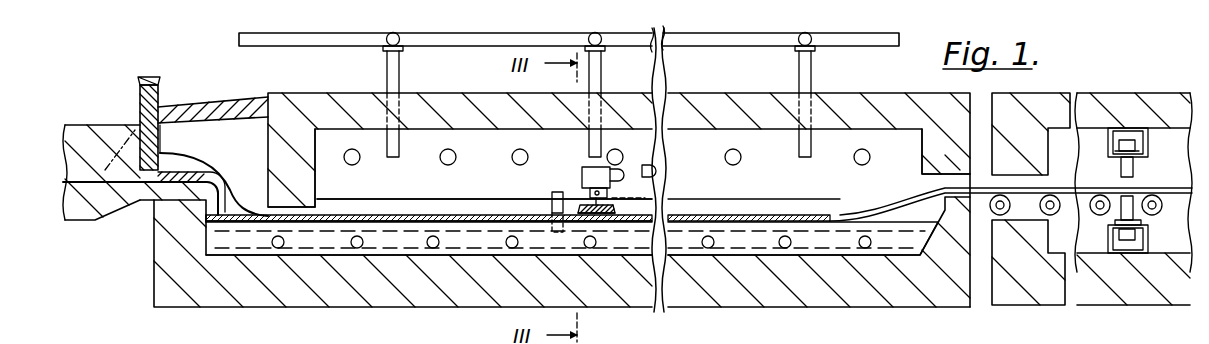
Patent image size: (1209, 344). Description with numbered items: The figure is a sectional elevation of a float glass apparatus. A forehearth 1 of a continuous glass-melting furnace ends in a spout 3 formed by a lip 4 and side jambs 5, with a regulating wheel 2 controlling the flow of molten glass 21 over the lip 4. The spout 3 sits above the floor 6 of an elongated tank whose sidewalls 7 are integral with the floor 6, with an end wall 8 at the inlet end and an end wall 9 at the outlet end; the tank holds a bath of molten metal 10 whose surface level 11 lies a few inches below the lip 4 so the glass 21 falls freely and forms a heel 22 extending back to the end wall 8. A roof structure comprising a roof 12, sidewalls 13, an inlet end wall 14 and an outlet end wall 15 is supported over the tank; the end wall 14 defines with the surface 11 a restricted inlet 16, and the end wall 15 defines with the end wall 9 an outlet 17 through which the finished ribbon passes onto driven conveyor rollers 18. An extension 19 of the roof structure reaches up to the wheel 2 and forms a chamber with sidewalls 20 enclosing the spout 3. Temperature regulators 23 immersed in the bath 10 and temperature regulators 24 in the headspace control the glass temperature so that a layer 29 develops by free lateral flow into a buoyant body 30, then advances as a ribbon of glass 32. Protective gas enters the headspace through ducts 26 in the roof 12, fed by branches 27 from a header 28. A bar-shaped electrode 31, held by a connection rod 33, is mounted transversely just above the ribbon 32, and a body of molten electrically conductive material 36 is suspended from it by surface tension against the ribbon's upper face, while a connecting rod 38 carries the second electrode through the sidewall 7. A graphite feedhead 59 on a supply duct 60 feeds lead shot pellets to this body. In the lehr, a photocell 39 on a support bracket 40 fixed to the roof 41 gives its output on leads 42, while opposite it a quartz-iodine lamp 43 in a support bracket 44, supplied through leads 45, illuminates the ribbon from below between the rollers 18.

The forehearth 1 is at (80, 210).
The regulating wheel 2 is at (140, 106).
The spout 3 is at (148, 205).
The lip 4 is at (205, 193).
The side jambs 5 is at (177, 162).
The floor 6 is at (397, 292).
The sidewalls 7 is at (434, 205).
The end wall 8 is at (157, 279).
The end wall 9 is at (962, 288).
The bath of molten metal 10 is at (637, 246).
The surface level 11 is at (909, 220).
The roof 12 is at (644, 103).
The sidewalls 13 is at (447, 135).
The inlet end wall 14 is at (277, 126).
The outlet end wall 15 is at (937, 139).
The inlet 16 is at (262, 204).
The outlet 17 is at (933, 174).
The conveyor rollers 18 is at (1060, 211).
The extension 19 is at (231, 108).
The sidewalls 20 is at (176, 130).
The molten glass 21 is at (214, 176).
The heel 22 is at (220, 221).
The temperature regulators 23 is at (357, 248).
The temperature regulators 24 is at (360, 164).
The ducts 26 is at (396, 90).
The branches 27 is at (386, 43).
The header 28 is at (306, 38).
The layer 29 is at (260, 221).
The buoyant body 30 is at (323, 221).
The bar-shaped electrode 31 is at (616, 212).
The ribbon of glass 32 is at (477, 221).
The connection rod 33 is at (608, 193).
The body of molten electrically conductive material 36 is at (582, 206).
The connecting rod 38 is at (551, 194).
The photocell 39 is at (1135, 172).
The support bracket 40 is at (1149, 138).
The roof 41 is at (1168, 98).
The leads 42 is at (1127, 151).
The quartz-iodine lamp 43 is at (1125, 200).
The support bracket 44 is at (1128, 240).
The leads 45 is at (1149, 239).
The graphite feedhead 59 is at (580, 166).
The supply duct 60 is at (654, 159).